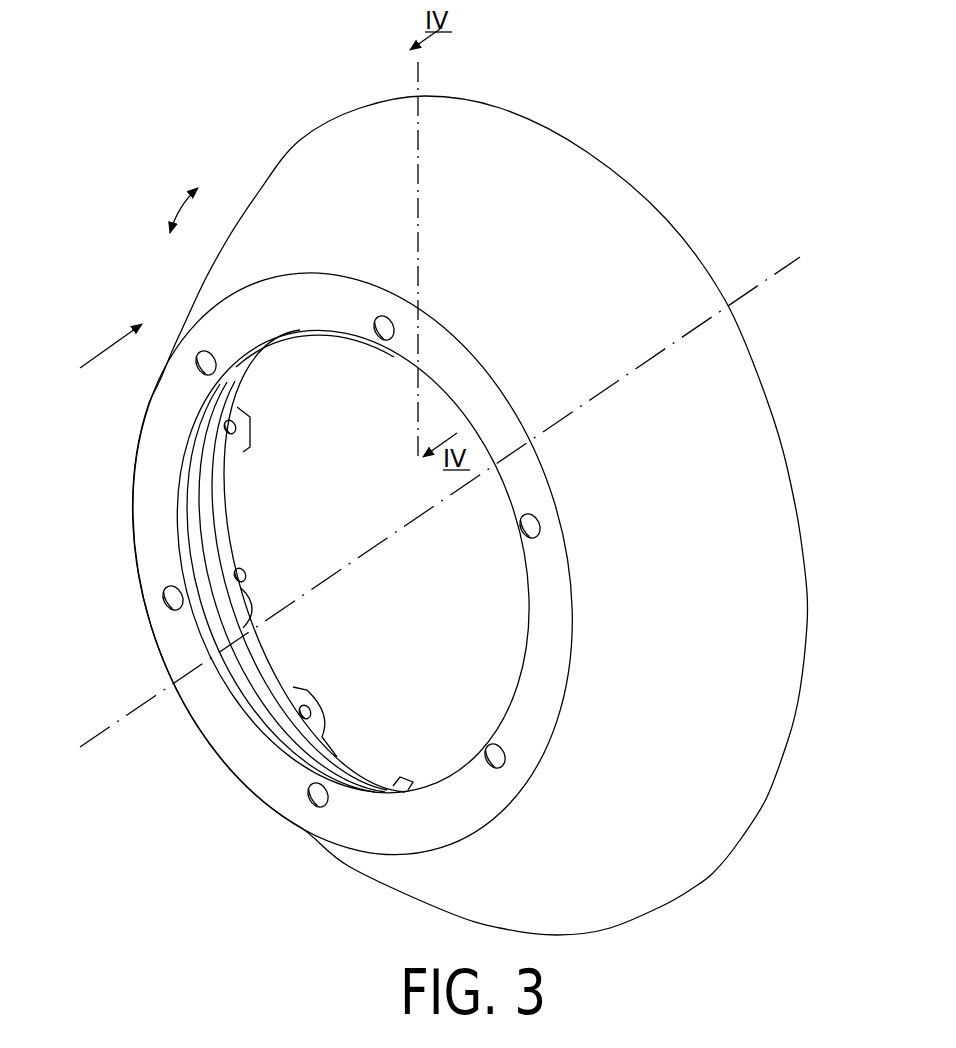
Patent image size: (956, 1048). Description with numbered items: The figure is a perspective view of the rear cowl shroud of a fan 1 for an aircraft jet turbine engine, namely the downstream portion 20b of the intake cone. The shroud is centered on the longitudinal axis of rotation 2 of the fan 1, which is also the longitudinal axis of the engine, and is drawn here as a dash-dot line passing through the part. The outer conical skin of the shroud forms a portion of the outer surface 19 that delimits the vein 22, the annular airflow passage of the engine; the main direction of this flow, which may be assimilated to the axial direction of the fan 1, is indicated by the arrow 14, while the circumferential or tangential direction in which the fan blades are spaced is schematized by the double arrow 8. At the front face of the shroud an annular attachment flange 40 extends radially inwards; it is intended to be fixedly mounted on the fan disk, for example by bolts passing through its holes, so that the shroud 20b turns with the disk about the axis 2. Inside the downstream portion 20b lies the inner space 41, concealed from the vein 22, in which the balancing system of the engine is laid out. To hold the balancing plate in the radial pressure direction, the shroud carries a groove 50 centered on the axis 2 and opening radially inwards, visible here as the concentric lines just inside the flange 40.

The fan 1 is at (128, 230).
The axis of rotation 2 is at (775, 272).
The circumferential direction 8 is at (174, 210).
The arrow representing the flow direction 14 is at (100, 352).
The outer surface 19 is at (582, 168).
The downstream portion of the intake cone 20b is at (240, 176).
The vein 22 is at (662, 291).
The annular attachment flange 40 is at (223, 443).
The inner space 41 is at (419, 612).
The groove 50 is at (243, 673).